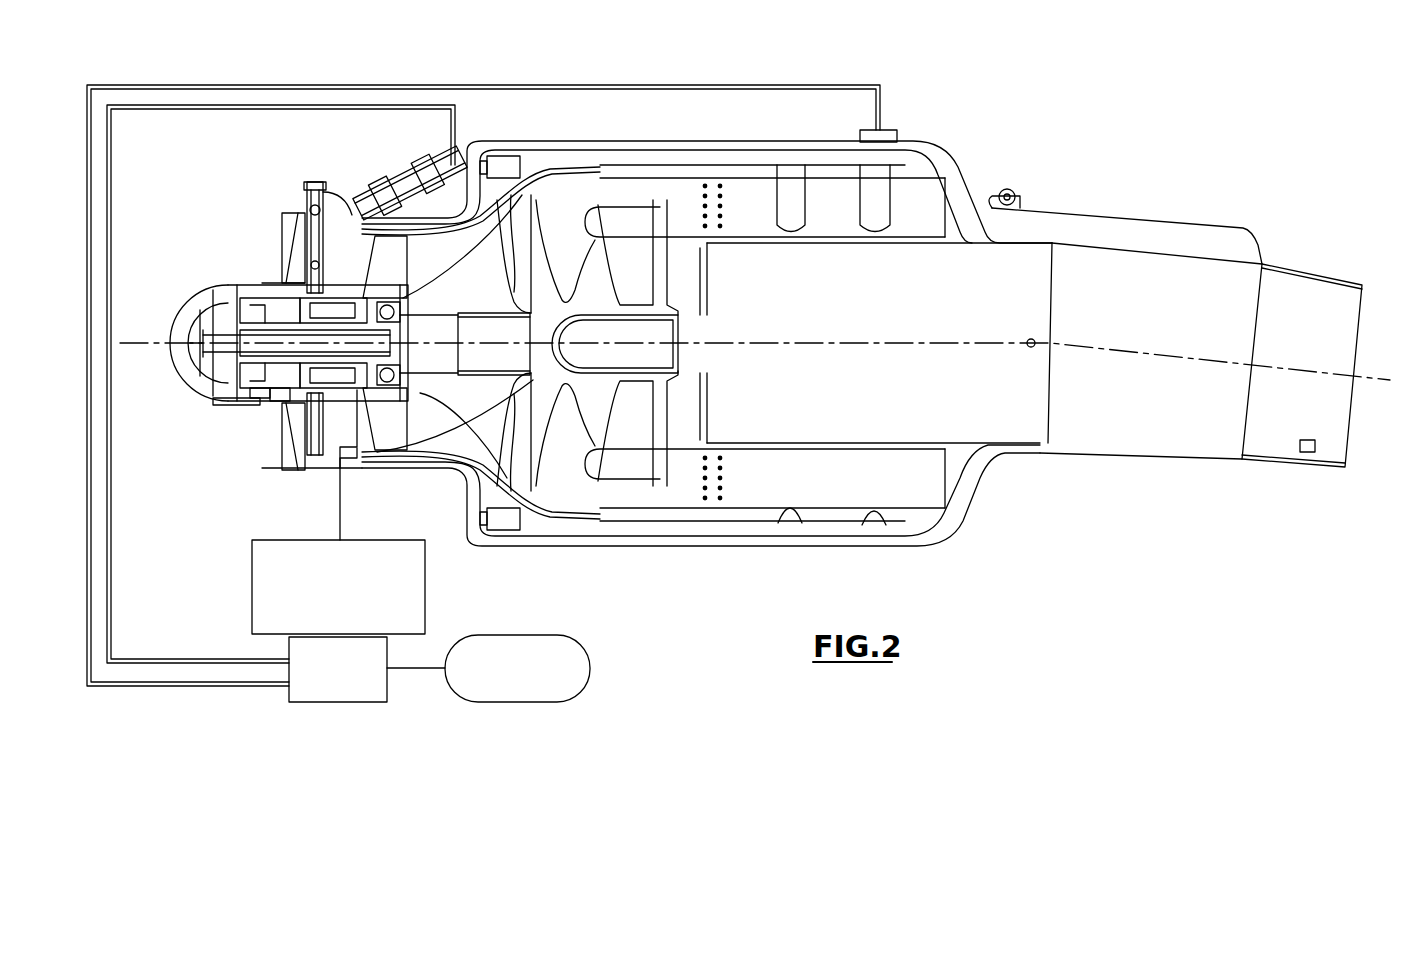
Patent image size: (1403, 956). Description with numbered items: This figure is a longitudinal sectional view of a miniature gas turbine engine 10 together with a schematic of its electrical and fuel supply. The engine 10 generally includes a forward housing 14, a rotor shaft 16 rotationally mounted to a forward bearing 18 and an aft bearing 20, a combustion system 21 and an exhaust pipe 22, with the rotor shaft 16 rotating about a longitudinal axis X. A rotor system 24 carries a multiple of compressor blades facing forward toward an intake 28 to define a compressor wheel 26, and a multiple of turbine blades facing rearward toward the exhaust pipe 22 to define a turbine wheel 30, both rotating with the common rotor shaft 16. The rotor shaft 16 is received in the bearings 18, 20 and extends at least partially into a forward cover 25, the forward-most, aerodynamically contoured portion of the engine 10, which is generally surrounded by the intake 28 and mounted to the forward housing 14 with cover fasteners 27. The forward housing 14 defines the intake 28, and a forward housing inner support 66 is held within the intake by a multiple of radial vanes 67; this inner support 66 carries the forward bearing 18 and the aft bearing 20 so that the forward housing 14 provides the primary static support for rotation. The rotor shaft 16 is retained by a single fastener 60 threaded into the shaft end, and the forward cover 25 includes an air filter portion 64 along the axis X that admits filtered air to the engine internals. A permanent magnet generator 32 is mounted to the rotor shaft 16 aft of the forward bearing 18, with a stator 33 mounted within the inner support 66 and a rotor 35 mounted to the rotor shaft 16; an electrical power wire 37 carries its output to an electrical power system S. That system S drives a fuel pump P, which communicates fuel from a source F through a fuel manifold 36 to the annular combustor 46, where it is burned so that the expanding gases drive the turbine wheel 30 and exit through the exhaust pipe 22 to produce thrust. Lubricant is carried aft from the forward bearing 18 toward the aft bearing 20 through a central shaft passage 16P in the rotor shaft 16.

The miniature gas turbine engine 10 is at (1000, 522).
The forward housing 14 is at (298, 202).
The rotor shaft 16 is at (503, 369).
The central shaft passage 16P is at (392, 340).
The forward bearing 18 is at (257, 385).
The aft bearing 20 is at (385, 300).
The combustion system 21 is at (833, 498).
The exhaust pipe 22 is at (1216, 328).
The rotor system 24 is at (672, 313).
The forward cover 25 is at (198, 286).
The compressor wheel 26 is at (498, 306).
The cover fasteners 27 is at (208, 408).
The intake 28 is at (270, 235).
The turbine wheel 30 is at (643, 290).
The permanent magnet generator 32 is at (322, 393).
The stator 33 is at (332, 316).
The rotor 35 is at (318, 318).
The fuel manifold 36 is at (898, 136).
The electrical power wire 37 is at (340, 514).
The annular combustor 46 is at (950, 184).
The single fastener 60 is at (238, 320).
The air filter portion 64 is at (176, 322).
The forward housing inner support 66 is at (272, 397).
The radial vanes 67 is at (348, 230).
The electrical power system S is at (425, 602).
The fuel pump P is at (387, 693).
The fuel source F is at (590, 660).
The longitudinal axis X is at (976, 346).